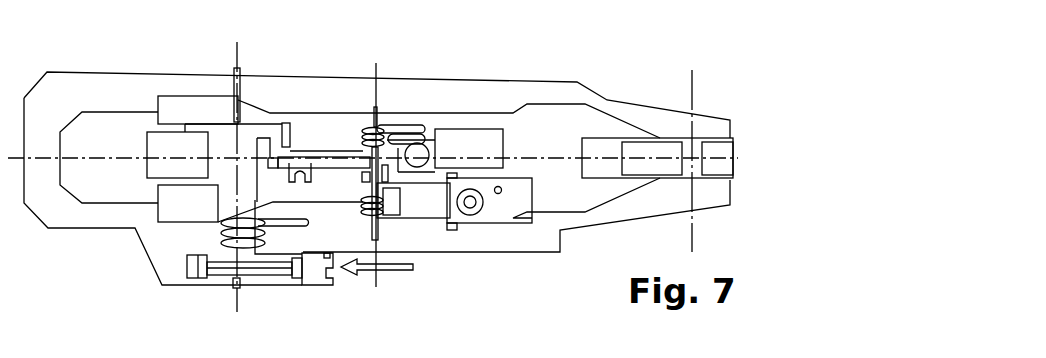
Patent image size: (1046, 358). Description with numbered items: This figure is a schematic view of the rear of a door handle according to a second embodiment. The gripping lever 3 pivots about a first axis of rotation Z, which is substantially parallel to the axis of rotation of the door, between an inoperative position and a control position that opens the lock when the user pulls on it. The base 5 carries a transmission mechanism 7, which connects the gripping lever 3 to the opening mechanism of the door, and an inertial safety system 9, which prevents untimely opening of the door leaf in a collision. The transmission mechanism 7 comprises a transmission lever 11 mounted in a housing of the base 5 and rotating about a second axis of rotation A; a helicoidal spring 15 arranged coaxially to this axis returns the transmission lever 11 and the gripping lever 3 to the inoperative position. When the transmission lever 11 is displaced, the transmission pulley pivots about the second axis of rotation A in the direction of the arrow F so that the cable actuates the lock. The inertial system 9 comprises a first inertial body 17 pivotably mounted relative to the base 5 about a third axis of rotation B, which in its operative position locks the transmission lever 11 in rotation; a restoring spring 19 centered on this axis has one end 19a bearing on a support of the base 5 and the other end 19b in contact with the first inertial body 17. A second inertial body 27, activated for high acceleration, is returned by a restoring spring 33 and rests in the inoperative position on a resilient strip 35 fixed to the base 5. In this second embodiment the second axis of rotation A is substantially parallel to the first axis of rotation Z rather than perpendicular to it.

The gripping lever 3 is at (297, 110).
The base 5 is at (630, 210).
The transmission mechanism 7 is at (135, 183).
The inertial safety system 9 is at (481, 279).
The transmission lever 11 is at (218, 272).
The helicoidal spring 15 is at (222, 236).
The first inertial body 17 is at (497, 150).
The restoring spring 19 is at (397, 122).
The end of restoring spring 19a is at (423, 123).
The other end of restoring spring 19b is at (420, 147).
The second inertial body 27 is at (380, 217).
The restoring spring 33 is at (362, 233).
The resilient strip 35 is at (497, 231).
The second axis of rotation A is at (237, 50).
The third axis of rotation B is at (376, 87).
The first axis of rotation Z is at (692, 78).
The arrow F is at (377, 278).